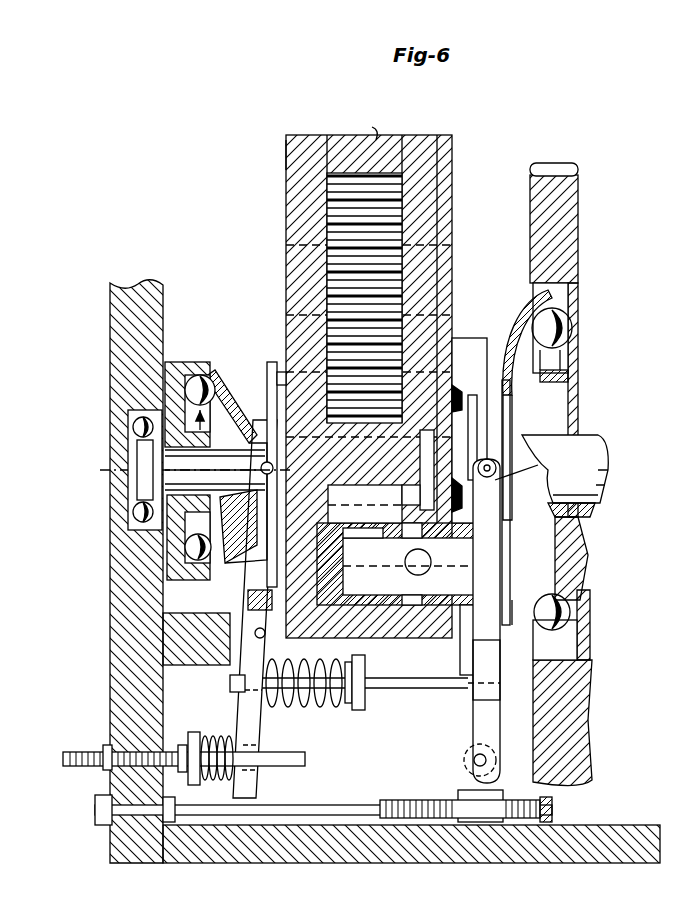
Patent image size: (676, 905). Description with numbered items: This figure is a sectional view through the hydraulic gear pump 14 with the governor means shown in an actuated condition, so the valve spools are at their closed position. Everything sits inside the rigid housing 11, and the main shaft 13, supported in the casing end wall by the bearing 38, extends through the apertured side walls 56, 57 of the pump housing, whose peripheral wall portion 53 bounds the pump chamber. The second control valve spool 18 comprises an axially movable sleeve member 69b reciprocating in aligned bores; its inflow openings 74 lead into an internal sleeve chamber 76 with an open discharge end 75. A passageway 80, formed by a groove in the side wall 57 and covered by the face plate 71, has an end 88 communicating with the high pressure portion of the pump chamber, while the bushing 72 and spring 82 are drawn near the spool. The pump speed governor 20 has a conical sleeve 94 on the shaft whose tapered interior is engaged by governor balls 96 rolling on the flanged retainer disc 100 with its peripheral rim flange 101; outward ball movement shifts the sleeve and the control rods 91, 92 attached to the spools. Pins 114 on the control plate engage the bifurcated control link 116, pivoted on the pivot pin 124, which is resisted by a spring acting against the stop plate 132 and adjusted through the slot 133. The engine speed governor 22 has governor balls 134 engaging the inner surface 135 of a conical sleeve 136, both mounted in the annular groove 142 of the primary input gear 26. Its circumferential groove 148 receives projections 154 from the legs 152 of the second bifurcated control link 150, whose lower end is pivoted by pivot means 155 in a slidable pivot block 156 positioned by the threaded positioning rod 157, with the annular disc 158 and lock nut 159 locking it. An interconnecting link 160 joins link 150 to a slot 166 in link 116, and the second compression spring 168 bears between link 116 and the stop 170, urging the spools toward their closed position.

The housing 11 is at (125, 710).
The main shaft 13 is at (600, 463).
The hydraulic gear pump 14 is at (270, 156).
The second control valve spool 18 is at (476, 338).
The pump speed governor 20 is at (178, 589).
The engine speed governor 22 is at (522, 632).
The primary input gear 26 is at (575, 248).
The bearing 38 is at (128, 445).
The peripheral wall portion 53 is at (405, 650).
The first side wall 56 is at (286, 218).
The second side wall 57 is at (430, 233).
The axially movable sleeve member 69b is at (462, 635).
The face plate 71 is at (445, 290).
The shaft 72 is at (433, 562).
The inflow opening 74 is at (405, 562).
The open discharge end 75 is at (500, 546).
The internal sleeve chamber 76 is at (365, 538).
The passageway 80 is at (424, 472).
The spring 82 is at (355, 490).
The passageway end 88 is at (422, 492).
The control rod 91 is at (270, 568).
The control rod 92 is at (275, 362).
The conical sleeve 94 is at (230, 380).
The governor balls 96 is at (180, 392).
The flanged retainer disc 100 is at (167, 552).
The peripheral rim flange 101 is at (200, 372).
The pins 114 is at (260, 468).
The bifurcated control link 116 is at (254, 709).
The pivot pin 124 is at (255, 633).
The stop plate 132 is at (228, 768).
The slot 133 is at (100, 752).
The governor balls 134 is at (573, 328).
The inner surface 135 is at (555, 303).
The conical sleeve 136 is at (514, 330).
The annular groove 142 is at (570, 292).
The circumferential groove 148 is at (490, 446).
The second bifurcated control link 150 is at (473, 723).
The legs 152 is at (540, 469).
The projections 154 is at (577, 505).
The pivot means 155 is at (470, 760).
The slidable pivot block 156 is at (462, 790).
The positioning rod 157 is at (392, 806).
The annular disc 158 is at (170, 830).
The lock nut 159 is at (95, 825).
The interconnecting link 160 is at (366, 698).
The slot 166 is at (240, 694).
The second compression spring 168 is at (255, 717).
The stop 170 is at (366, 690).